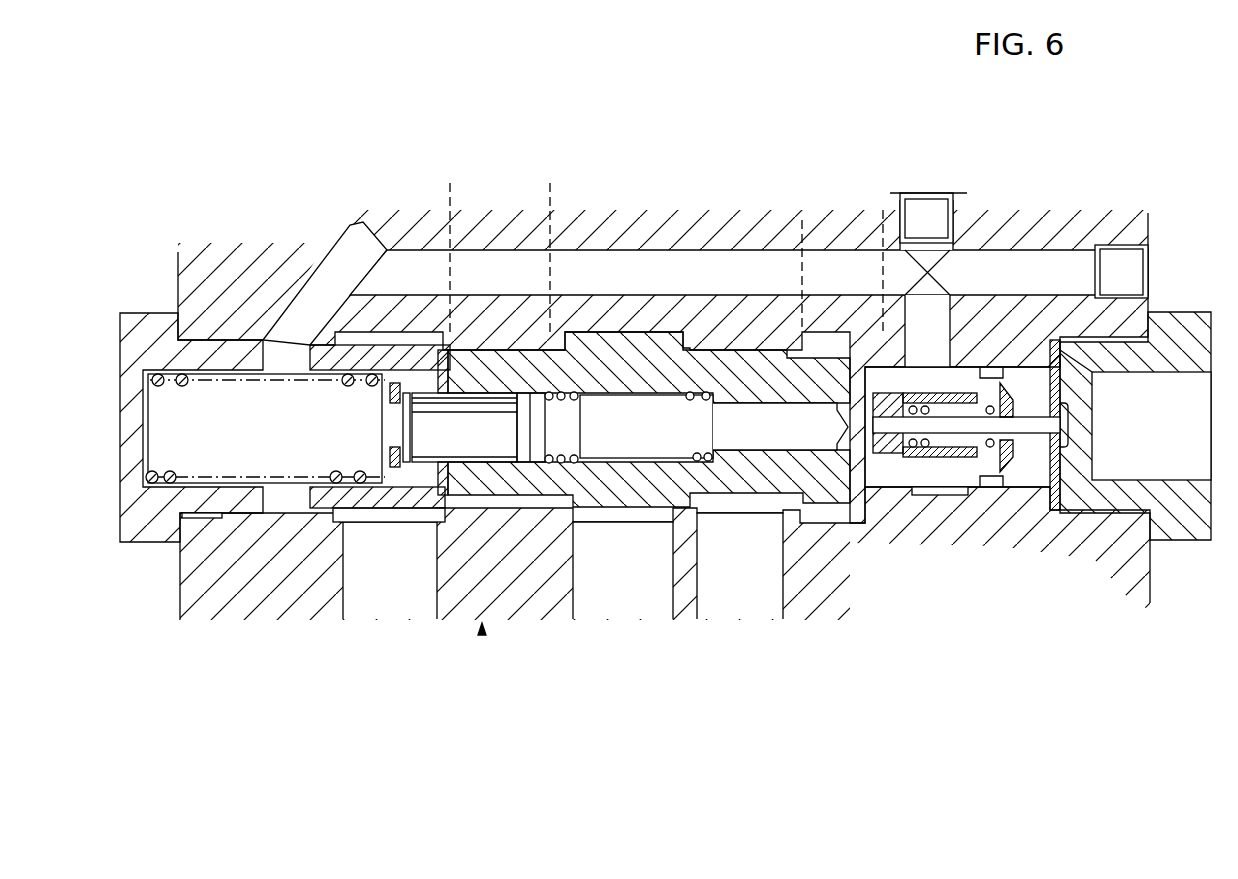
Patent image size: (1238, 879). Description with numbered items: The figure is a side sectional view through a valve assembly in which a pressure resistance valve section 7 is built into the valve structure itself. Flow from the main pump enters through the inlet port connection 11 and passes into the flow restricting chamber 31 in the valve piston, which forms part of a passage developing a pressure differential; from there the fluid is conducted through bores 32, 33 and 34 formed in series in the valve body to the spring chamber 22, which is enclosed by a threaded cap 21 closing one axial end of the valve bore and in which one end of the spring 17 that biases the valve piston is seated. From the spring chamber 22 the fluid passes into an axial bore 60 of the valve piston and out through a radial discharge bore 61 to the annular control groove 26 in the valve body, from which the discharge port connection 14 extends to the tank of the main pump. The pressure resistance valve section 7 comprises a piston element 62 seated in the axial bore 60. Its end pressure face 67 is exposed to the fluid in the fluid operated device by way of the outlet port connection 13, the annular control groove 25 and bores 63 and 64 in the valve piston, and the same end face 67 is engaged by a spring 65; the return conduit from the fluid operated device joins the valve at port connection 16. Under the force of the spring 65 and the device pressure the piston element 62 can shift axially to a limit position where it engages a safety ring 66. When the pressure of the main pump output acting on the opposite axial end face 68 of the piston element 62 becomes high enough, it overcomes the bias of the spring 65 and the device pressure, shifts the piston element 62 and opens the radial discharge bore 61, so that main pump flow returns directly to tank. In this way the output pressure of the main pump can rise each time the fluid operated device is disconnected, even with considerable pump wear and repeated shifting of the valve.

The pressure resistance valve section 7 is at (484, 633).
The inlet port connection 11 is at (1157, 380).
The outlet port connection 13 is at (883, 223).
The discharge port connection 14 is at (437, 567).
The port connection 16 is at (528, 215).
The spring 17 is at (158, 373).
The threaded cap 21 is at (155, 517).
The spring chamber 22 is at (250, 440).
The annular control groove 25 is at (826, 340).
The annular control groove 26 is at (333, 515).
The flow restricting chamber 31 is at (1030, 480).
The bore 32 is at (927, 310).
The bore 33 is at (713, 277).
The bore 34 is at (325, 290).
The axial bore 60 is at (378, 493).
The radial discharge bore 61 is at (425, 505).
The piston element 62 is at (487, 425).
The bore 63 is at (840, 378).
The bore 64 is at (740, 440).
The spring 65 is at (587, 462).
The safety ring 66 is at (393, 385).
The end pressure face 67 is at (579, 402).
The axial end face 68 is at (404, 392).